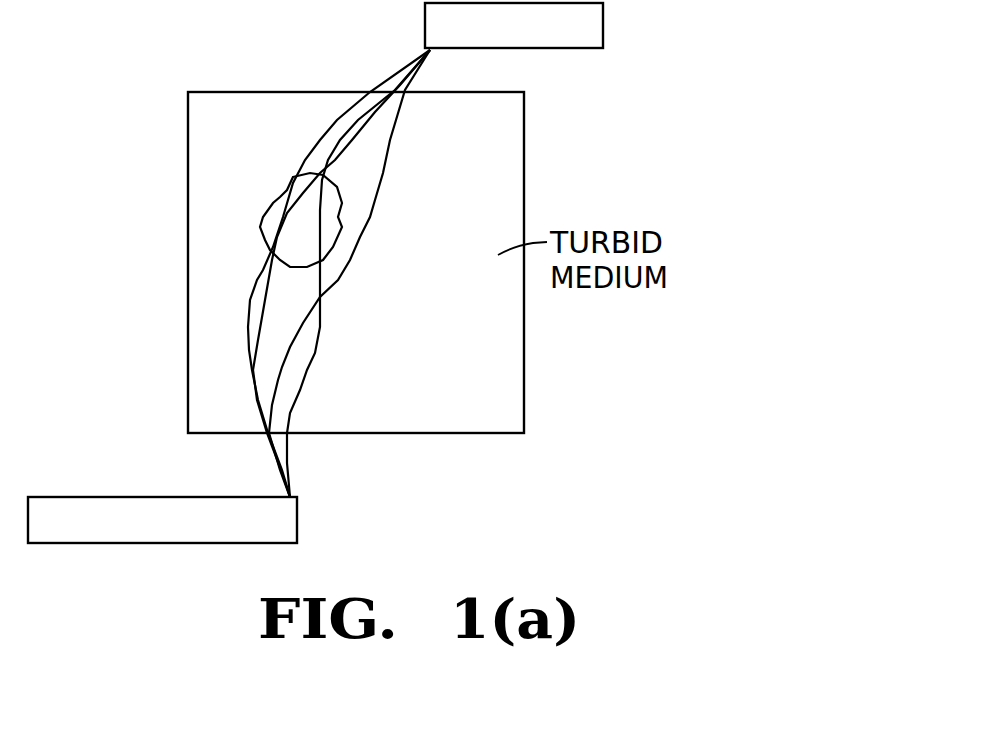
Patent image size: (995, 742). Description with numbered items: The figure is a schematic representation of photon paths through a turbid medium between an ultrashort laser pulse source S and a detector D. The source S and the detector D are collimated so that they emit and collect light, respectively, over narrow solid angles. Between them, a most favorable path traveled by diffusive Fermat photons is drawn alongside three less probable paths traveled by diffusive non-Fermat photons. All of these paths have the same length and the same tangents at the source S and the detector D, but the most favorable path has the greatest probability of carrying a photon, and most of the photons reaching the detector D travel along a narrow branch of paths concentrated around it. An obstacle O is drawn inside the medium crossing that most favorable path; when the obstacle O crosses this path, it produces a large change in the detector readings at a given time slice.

The detector D is at (425, 30).
The source S is at (297, 528).
The obstacle O is at (300, 228).